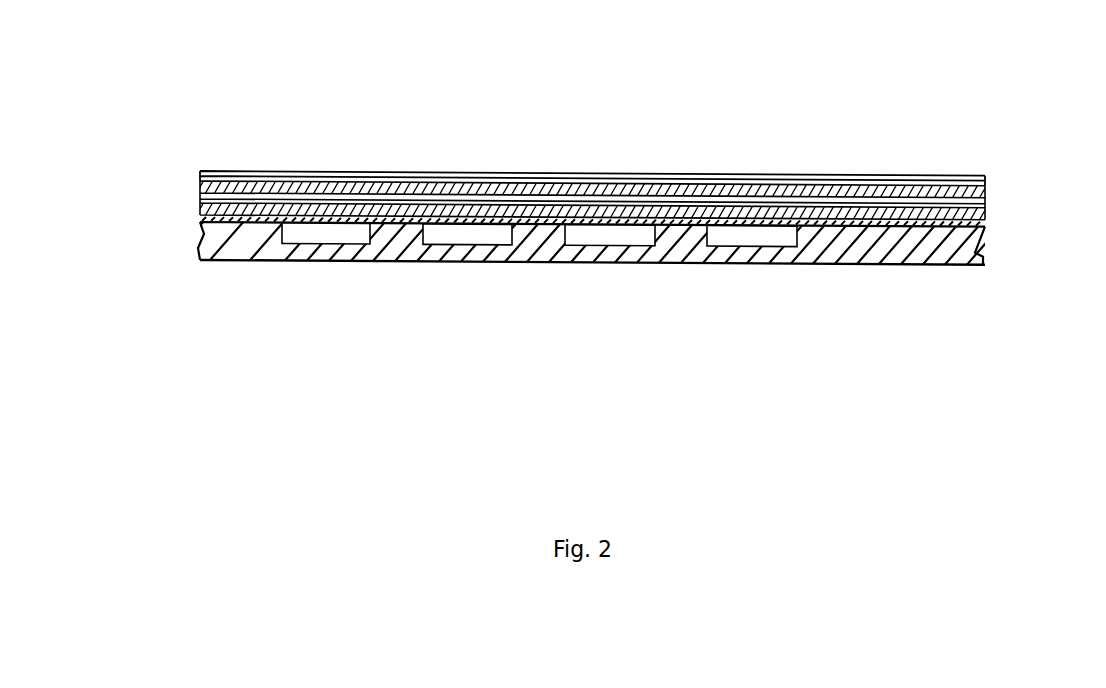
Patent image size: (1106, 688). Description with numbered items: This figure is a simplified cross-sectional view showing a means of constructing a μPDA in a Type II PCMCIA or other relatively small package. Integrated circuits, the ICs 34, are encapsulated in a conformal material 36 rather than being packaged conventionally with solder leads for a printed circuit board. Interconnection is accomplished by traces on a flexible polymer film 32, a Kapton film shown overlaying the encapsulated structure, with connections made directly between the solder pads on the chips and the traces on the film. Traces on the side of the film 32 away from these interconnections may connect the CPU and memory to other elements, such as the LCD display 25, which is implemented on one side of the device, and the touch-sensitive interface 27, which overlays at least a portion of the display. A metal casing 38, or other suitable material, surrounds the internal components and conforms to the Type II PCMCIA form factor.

The LCD display 25 is at (992, 185).
The touch-sensitive interface 27 is at (753, 174).
The flexible polymer film 32 is at (990, 222).
The ICs 34 is at (337, 232).
The conformal material 36 is at (200, 242).
The metal casing 38 is at (702, 262).